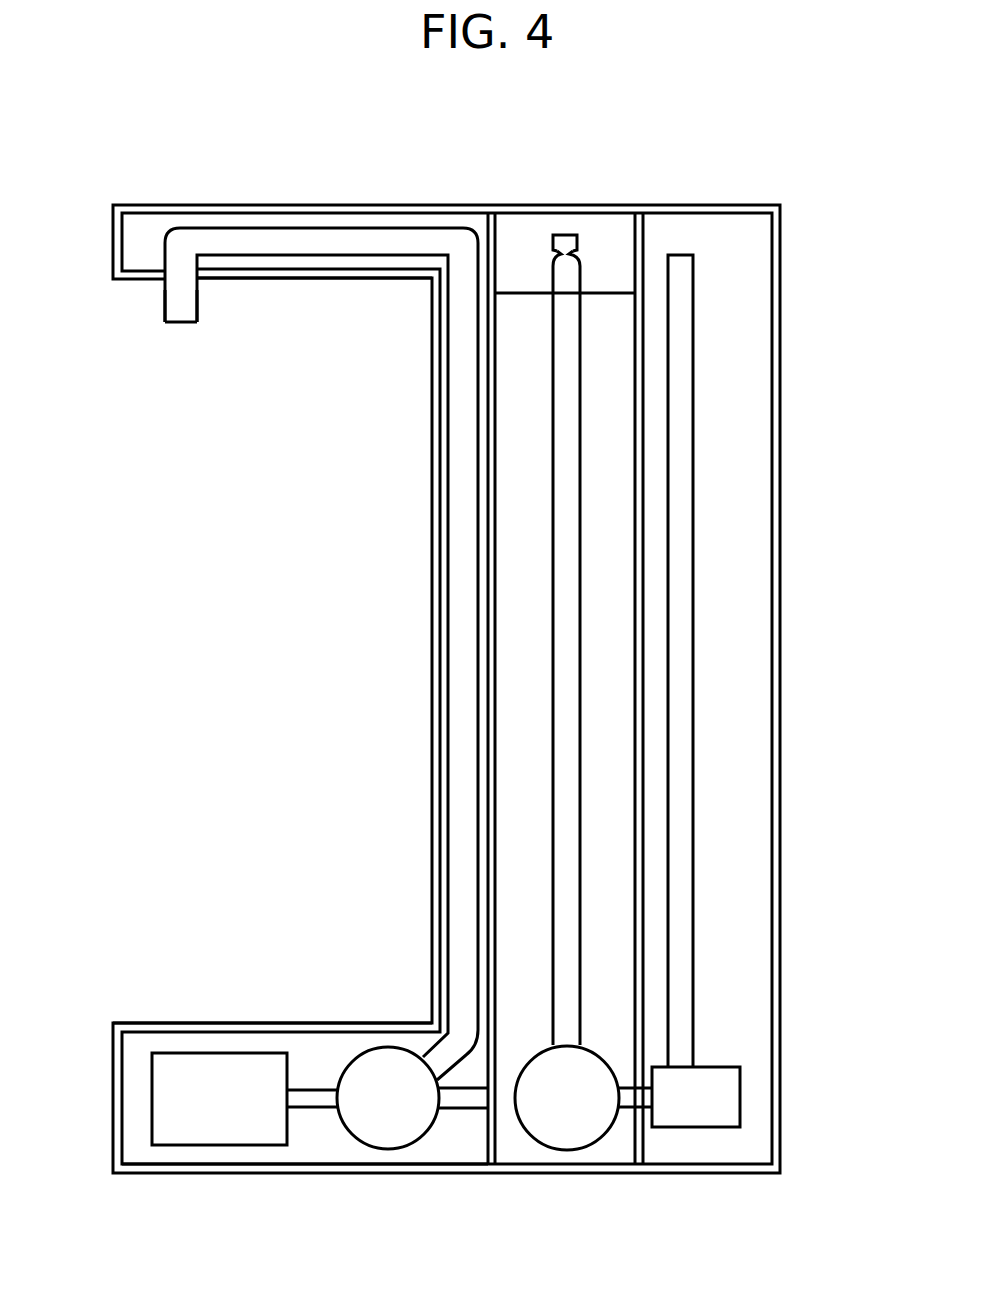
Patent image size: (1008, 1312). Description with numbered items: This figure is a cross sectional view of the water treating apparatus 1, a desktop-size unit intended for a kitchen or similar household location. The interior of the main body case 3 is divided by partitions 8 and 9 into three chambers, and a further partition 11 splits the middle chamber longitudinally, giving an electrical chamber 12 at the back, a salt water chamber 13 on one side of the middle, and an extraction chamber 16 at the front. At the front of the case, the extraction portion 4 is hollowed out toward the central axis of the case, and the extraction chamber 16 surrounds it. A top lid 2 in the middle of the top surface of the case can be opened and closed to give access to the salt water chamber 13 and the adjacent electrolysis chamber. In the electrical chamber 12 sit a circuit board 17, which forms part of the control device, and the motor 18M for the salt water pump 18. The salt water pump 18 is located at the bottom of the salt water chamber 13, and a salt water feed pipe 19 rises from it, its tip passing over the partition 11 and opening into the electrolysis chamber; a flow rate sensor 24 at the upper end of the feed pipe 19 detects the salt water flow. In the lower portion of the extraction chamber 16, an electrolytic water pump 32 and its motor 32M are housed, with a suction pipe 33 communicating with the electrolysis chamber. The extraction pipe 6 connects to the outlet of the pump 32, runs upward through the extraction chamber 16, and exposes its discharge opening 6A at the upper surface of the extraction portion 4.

The water treating apparatus 1 is at (768, 161).
The top lid 2 is at (571, 205).
The main body case 3 is at (780, 598).
The extraction portion 4 is at (236, 669).
The extraction pipe 6 is at (449, 643).
The discharge opening 6A is at (165, 291).
The partition 8 is at (487, 780).
The partition 9 is at (643, 460).
The partition 11 is at (520, 292).
The electrical chamber 12 is at (733, 745).
The salt water chamber 13 is at (607, 862).
The extraction chamber 16 is at (446, 1143).
The circuit board 17 is at (693, 968).
The salt water pump 18 is at (578, 1127).
The motor for the salt water pump 18M is at (740, 1100).
The salt water feed pipe 19 is at (580, 611).
The flow rate sensor 24 is at (578, 234).
The electrolytic water pump 32 is at (381, 1128).
The motor 32M is at (197, 1130).
The suction pipe 33 is at (458, 1110).